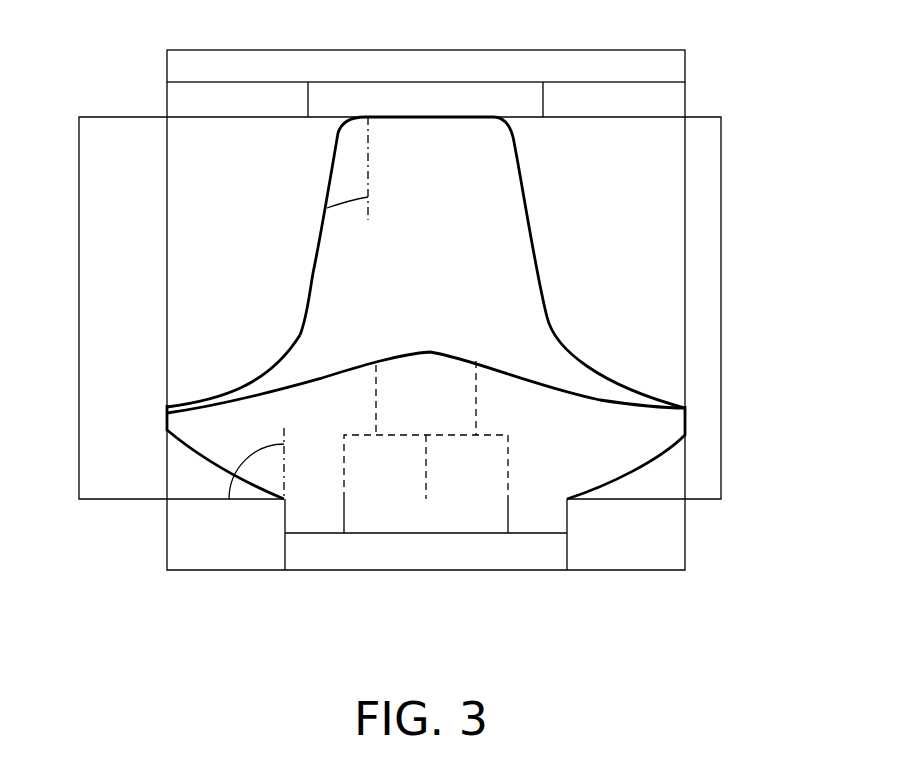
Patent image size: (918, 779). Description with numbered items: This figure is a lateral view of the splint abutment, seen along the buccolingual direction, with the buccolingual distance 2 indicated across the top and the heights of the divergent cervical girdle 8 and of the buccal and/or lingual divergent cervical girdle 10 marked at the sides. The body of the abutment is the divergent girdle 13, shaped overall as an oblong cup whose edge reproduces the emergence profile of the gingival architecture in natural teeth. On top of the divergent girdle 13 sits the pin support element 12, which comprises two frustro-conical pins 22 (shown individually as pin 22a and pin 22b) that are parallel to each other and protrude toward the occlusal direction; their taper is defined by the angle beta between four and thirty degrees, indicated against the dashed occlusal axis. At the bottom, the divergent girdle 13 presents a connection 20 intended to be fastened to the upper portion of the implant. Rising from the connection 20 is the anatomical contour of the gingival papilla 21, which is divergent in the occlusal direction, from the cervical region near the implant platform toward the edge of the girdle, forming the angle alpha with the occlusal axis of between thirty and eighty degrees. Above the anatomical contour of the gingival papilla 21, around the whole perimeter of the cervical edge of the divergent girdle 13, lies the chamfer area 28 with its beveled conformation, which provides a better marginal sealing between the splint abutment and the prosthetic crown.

The buccolingual distance 2 is at (426, 296).
The height of the divergent cervical girdle 8 is at (654, 308).
The height of the buccal and/or lingual divergent cervical girdle 10 is at (181, 308).
The pin support element 12 is at (590, 385).
The divergent girdle 13 is at (660, 423).
The connection 20 is at (388, 502).
The anatomical contour of the gingival papilla 21 is at (235, 476).
The pins 22 is at (214, 398).
The pin 22a is at (431, 352).
The pin 22b is at (253, 403).
The chamfer area 28 is at (167, 425).